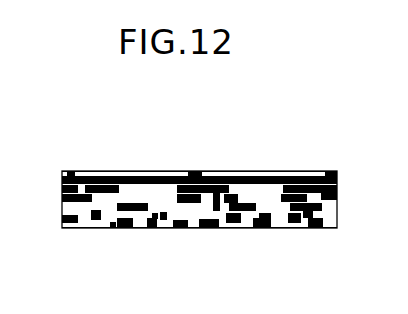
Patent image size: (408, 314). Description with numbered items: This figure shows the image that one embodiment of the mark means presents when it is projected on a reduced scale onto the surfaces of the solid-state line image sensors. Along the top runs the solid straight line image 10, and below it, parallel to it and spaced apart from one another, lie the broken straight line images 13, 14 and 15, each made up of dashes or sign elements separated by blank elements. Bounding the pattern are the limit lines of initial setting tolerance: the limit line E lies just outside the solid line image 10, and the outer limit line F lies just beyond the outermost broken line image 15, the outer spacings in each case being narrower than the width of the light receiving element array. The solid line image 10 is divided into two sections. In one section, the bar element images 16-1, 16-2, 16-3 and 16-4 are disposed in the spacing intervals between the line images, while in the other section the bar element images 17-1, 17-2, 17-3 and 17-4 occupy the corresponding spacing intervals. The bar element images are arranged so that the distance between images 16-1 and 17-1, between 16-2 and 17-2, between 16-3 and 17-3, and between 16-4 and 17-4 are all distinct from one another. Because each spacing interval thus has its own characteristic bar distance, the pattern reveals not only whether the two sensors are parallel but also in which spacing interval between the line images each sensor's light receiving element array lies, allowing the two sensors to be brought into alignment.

The solid straight line image 10 is at (293, 172).
The broken straight line image 13 is at (337, 198).
The broken straight line image 14 is at (283, 218).
The broken straight line image 15 is at (315, 229).
The bar element image 16-1 is at (62, 186).
The bar element image 16-2 is at (68, 200).
The bar element image 16-3 is at (94, 218).
The bar element image 16-4 is at (114, 229).
The bar element image 17-1 is at (190, 172).
The bar element image 17-2 is at (177, 186).
The bar element image 17-3 is at (168, 206).
The bar element image 17-4 is at (157, 228).
The limit line of initial setting tolerance E is at (315, 171).
The outer limit line of initial setting tolerance F is at (329, 229).